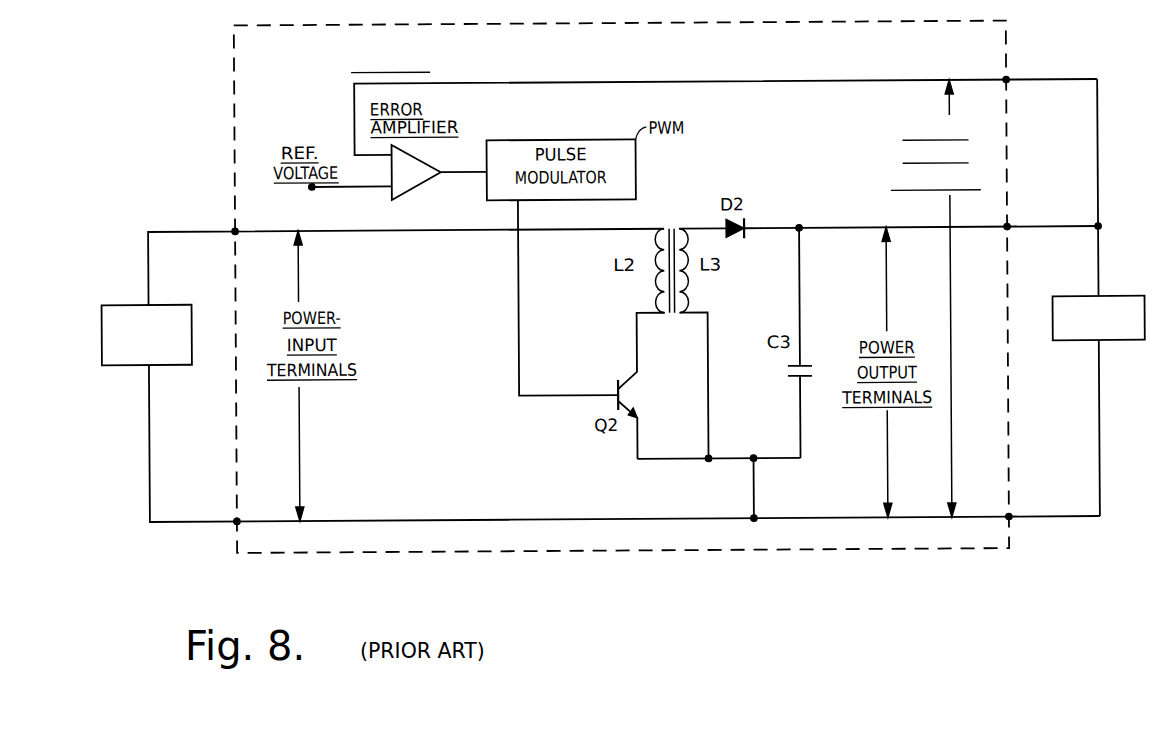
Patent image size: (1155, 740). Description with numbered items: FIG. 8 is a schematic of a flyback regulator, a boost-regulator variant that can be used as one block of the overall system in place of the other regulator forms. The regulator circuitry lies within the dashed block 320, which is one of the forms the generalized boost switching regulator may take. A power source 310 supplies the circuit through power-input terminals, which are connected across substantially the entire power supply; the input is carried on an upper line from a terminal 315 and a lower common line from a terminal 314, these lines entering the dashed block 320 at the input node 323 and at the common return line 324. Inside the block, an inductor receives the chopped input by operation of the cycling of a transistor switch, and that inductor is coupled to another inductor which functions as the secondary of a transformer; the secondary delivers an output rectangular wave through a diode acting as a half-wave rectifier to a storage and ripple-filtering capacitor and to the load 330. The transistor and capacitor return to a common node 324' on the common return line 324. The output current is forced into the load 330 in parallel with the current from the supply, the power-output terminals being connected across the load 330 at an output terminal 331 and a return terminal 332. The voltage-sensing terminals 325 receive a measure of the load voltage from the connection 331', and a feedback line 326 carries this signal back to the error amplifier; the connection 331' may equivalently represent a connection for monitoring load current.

The power source 310 is at (113, 362).
The negative power-input terminal line 314 is at (200, 519).
The positive power-input terminal line 315 is at (200, 229).
The dashed block 320 is at (555, 550).
The power input node 323 is at (278, 229).
The common return line 324 is at (620, 498).
The common node of transistor and capacitor 324' is at (727, 489).
The voltage sensing terminals 325 is at (975, 229).
The feedback line 326 is at (810, 82).
The load 330 is at (1137, 343).
The output terminal 331 is at (945, 232).
The voltage-sensing terminal connection 331' is at (1121, 152).
The load return terminal 332 is at (1049, 519).